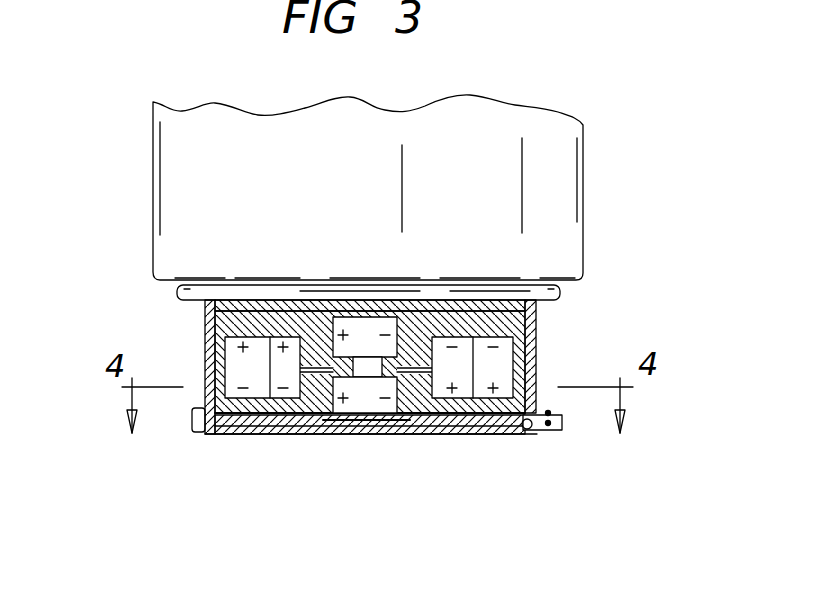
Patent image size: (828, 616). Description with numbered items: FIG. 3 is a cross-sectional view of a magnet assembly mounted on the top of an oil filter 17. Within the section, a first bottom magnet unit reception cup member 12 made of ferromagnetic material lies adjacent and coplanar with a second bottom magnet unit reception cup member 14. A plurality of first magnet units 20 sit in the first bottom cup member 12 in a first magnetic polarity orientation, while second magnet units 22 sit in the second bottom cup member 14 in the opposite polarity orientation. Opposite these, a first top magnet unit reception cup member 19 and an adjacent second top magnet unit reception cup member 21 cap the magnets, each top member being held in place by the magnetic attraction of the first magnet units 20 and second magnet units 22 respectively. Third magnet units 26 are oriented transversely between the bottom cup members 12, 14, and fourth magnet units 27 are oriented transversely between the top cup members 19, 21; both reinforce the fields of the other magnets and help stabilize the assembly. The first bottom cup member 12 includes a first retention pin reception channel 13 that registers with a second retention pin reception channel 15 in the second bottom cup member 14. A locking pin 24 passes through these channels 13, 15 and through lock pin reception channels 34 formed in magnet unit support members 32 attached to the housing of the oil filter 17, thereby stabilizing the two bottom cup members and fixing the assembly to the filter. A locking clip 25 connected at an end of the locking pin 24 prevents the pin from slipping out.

The first bottom magnet unit reception cup member 12 is at (318, 412).
The first retention pin reception channel 13 is at (250, 400).
The second bottom magnet unit reception cup member 14 is at (483, 416).
The second retention pin reception channel 15 is at (413, 412).
The oil filter 17 is at (568, 245).
The first top magnet unit reception cup member 19 is at (285, 327).
The first magnet units 20 is at (222, 365).
The second top magnet unit reception cup member 21 is at (523, 283).
The second magnet units 22 is at (536, 317).
The locking pin 24 is at (453, 432).
The locking clip 25 is at (547, 430).
The third magnet units 26 is at (370, 412).
The fourth magnet units 27 is at (370, 318).
The magnet unit support members 32 is at (210, 335).
The lock pin reception channels 34 is at (200, 398).